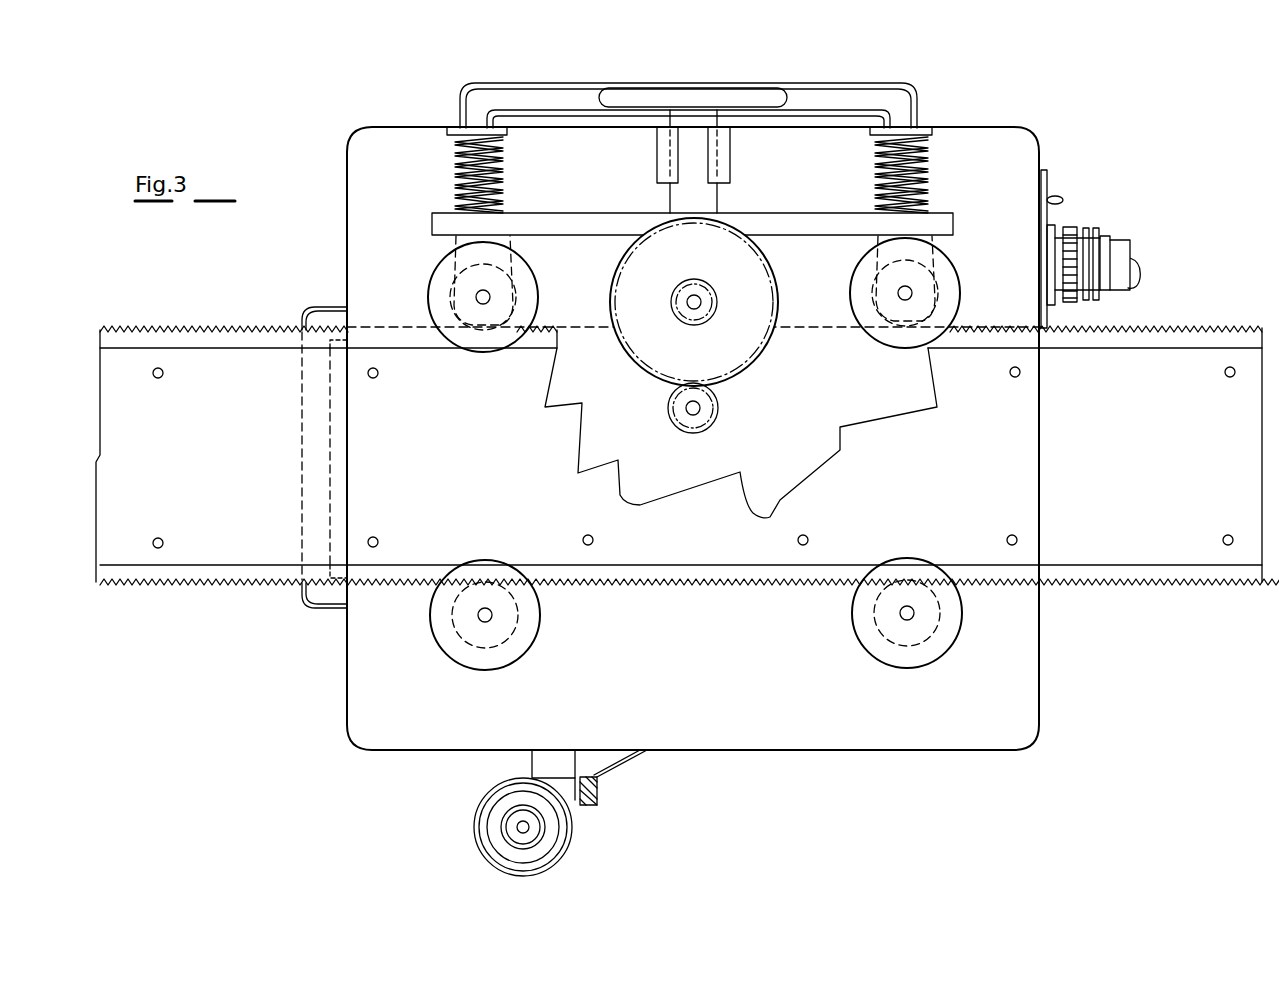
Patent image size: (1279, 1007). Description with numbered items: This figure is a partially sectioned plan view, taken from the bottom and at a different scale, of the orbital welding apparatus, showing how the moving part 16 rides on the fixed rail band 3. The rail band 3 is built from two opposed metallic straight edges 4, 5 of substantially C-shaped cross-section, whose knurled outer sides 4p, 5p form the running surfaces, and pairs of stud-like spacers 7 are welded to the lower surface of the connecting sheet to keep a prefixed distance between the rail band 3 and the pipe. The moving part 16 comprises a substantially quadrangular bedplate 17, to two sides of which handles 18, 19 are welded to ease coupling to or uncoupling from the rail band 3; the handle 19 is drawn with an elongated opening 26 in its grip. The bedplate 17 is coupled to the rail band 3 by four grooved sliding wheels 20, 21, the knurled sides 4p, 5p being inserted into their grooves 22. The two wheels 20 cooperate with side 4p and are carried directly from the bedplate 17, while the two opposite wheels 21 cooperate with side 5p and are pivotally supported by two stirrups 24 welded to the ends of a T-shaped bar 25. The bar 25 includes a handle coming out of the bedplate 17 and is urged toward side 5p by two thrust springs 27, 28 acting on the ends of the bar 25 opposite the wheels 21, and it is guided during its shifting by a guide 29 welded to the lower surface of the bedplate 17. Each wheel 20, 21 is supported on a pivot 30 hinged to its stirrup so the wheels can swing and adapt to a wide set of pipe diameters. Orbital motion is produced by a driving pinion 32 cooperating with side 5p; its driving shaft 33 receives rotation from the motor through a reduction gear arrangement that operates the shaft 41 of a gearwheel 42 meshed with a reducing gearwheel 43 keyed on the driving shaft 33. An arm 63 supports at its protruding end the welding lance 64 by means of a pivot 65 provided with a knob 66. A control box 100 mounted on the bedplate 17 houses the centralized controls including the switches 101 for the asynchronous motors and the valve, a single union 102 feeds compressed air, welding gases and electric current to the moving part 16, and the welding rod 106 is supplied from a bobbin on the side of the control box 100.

The rail band 3 is at (1170, 585).
The straight edge 4 is at (215, 586).
The knurled outer side 4p is at (160, 586).
The straight edge 5 is at (1170, 326).
The knurled outer side 5p is at (178, 326).
The spacers 7 is at (160, 378).
The moving part 16 is at (345, 657).
The bedplate 17 is at (1040, 655).
The handle 18 is at (318, 314).
The handle 19 is at (830, 86).
The grooved sliding wheels 20 is at (505, 655).
The grooved sliding wheels 21 is at (445, 268).
The grooves 22 is at (450, 298).
The stirrups 24 is at (520, 245).
The T-shaped bar 25 is at (795, 216).
The handle slot 26 is at (645, 92).
The thrust spring 27 is at (505, 175).
The thrust spring 28 is at (928, 162).
The guide 29 is at (718, 158).
The pivot 30 is at (490, 296).
The driving pinion 32 is at (672, 303).
The driving shaft 33 is at (700, 303).
The shaft 41 is at (680, 408).
The gearwheel 42 is at (718, 408).
The reducing gearwheel 43 is at (748, 346).
The arm 63 is at (540, 765).
The welding lance 64 is at (475, 830).
The pivot 65 is at (575, 800).
The knob 66 is at (600, 795).
The control box 100 is at (1047, 168).
The switches 101 is at (1062, 200).
The union 102 is at (1102, 236).
The welding rod 106 is at (640, 766).